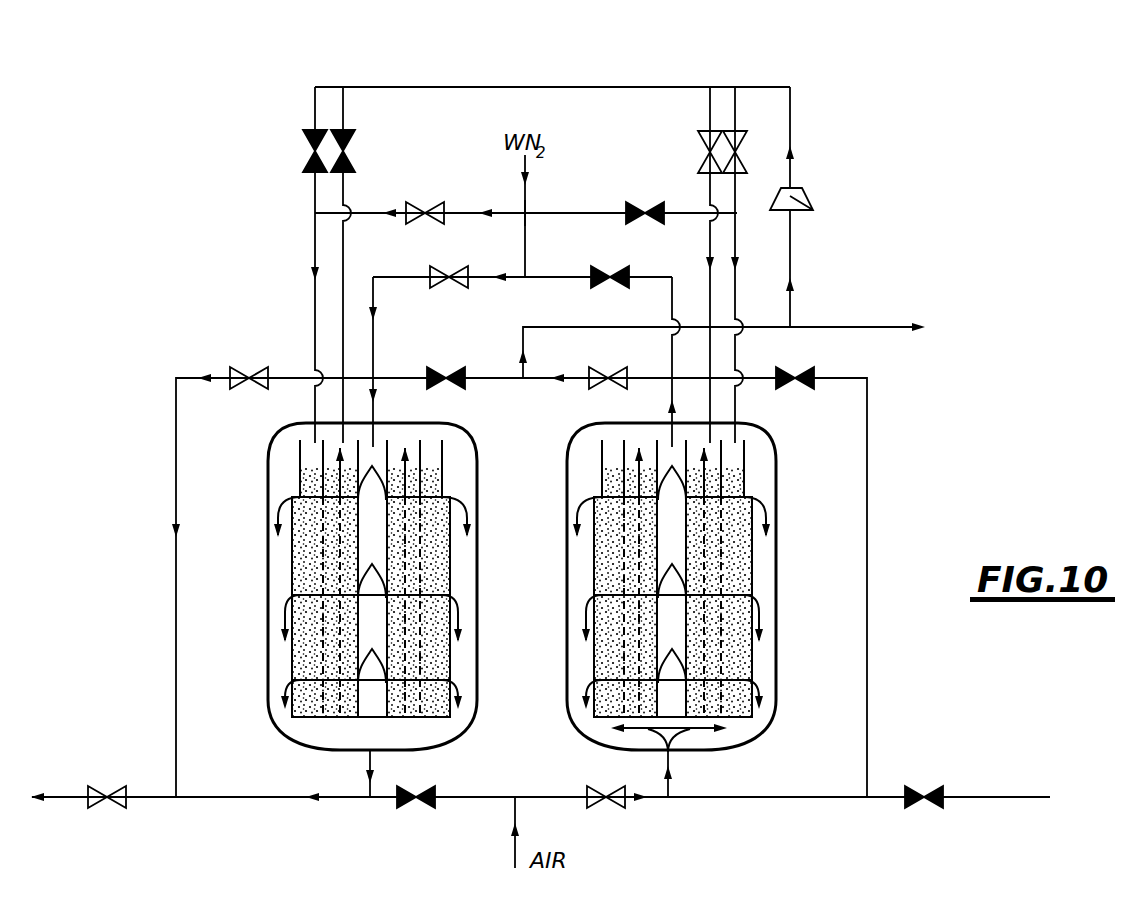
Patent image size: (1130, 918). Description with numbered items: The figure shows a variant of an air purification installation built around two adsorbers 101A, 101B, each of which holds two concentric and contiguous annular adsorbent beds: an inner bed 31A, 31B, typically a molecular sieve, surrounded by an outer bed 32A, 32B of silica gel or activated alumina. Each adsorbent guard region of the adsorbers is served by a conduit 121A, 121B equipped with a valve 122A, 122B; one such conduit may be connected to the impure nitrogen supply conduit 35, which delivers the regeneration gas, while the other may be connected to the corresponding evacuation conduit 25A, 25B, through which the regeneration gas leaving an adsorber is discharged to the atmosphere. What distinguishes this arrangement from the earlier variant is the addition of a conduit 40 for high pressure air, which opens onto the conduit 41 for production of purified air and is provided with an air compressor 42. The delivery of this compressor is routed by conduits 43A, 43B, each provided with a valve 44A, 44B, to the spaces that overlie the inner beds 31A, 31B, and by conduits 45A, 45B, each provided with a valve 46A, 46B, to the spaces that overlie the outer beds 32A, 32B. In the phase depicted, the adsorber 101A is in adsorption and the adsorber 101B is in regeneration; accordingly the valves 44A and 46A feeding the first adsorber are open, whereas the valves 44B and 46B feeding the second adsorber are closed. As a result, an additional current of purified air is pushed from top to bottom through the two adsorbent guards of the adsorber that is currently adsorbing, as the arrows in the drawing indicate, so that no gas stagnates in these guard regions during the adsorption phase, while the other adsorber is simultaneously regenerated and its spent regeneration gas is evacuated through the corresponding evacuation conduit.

The conduit for evacuating regeneration gas 25A is at (977, 800).
The conduit for evacuating regeneration gas 25B is at (57, 799).
The inner annular bed 31A is at (698, 702).
The inner annular bed 31B is at (342, 705).
The outer annular bed 32A is at (745, 652).
The outer annular bed 32B is at (308, 568).
The impure nitrogen supply conduit 35 is at (523, 203).
The conduit for high pressure air 40 is at (793, 238).
The conduit for production of purified air 41 is at (577, 327).
The air compressor 42 is at (803, 203).
The conduit 43A is at (738, 108).
The conduit 43B is at (315, 107).
The valve 44A is at (743, 140).
The valve 44B is at (308, 158).
The conduit 45A is at (710, 108).
The conduit 45B is at (345, 108).
The valve 46A is at (705, 130).
The valve 46B is at (352, 132).
The adsorber 101A is at (790, 594).
The adsorber 101B is at (258, 606).
The conduit 121A is at (737, 306).
The conduit 121B is at (293, 377).
The valve 122A is at (640, 210).
The valve 122B is at (413, 207).